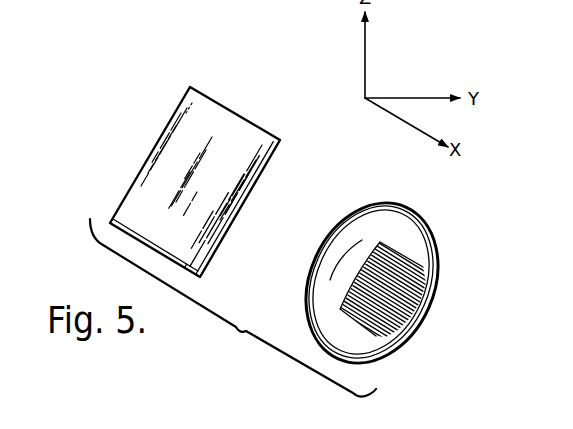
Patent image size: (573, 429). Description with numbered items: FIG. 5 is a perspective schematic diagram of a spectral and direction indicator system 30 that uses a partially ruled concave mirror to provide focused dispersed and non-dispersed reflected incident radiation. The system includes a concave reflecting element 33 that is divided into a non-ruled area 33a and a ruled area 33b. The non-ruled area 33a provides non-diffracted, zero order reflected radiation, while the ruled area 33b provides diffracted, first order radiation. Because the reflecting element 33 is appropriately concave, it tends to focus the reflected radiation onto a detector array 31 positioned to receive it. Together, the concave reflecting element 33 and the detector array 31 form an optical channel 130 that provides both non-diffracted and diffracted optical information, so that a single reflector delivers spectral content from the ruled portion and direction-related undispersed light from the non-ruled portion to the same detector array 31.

The spectral and direction indicator system 30 is at (377, 277).
The detector array 31 is at (195, 179).
The concave reflecting element 33 is at (336, 217).
The non-ruled area 33a is at (318, 313).
The ruled area 33b is at (457, 358).
The optical channel 130 is at (233, 308).